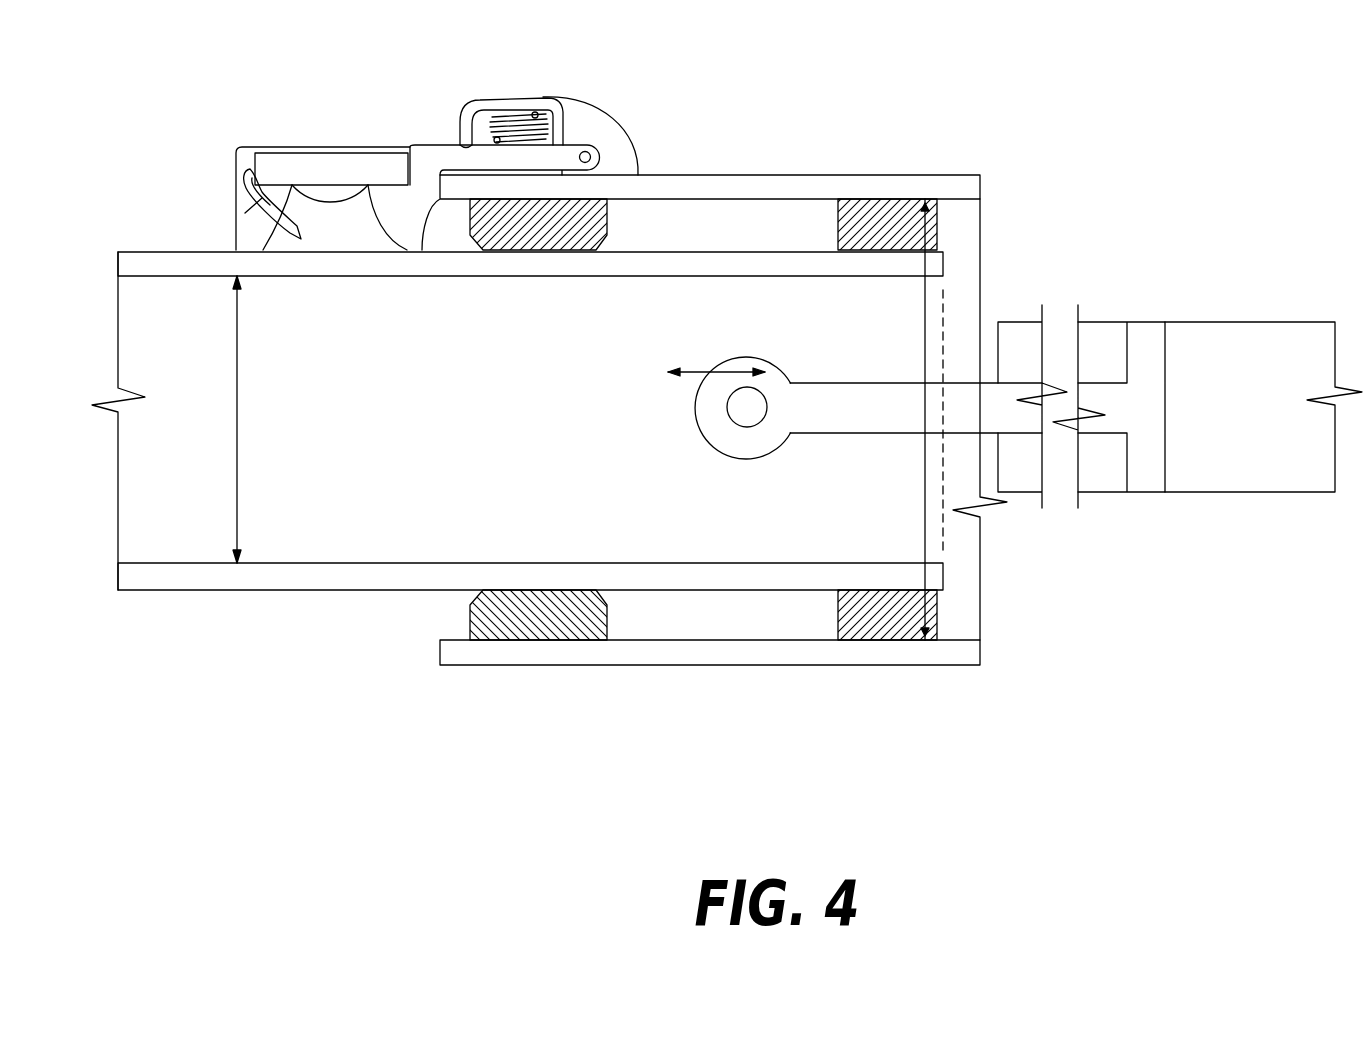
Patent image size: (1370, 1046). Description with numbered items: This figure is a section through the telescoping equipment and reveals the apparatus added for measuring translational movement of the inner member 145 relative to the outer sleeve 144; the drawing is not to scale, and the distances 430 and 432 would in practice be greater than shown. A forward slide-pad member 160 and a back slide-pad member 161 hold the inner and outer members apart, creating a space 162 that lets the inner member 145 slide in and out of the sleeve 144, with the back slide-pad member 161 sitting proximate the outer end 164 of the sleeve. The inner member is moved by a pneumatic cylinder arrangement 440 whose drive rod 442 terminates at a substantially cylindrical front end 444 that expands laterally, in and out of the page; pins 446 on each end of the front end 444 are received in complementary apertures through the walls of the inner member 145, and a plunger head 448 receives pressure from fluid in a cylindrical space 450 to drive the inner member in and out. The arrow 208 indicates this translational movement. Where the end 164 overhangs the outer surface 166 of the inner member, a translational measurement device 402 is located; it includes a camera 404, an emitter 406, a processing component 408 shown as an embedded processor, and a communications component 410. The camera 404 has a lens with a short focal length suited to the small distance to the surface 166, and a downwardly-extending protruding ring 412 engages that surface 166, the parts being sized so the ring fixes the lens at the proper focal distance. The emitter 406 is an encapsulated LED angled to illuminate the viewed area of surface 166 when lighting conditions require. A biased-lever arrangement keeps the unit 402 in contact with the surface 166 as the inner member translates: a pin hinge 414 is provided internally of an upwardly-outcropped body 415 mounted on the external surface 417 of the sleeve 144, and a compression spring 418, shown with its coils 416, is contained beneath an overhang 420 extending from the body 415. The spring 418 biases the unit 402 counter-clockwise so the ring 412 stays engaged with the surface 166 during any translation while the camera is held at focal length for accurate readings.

The translational measurement device 402 is at (326, 104).
The camera 404 is at (350, 170).
The emitter 406 is at (262, 222).
The processing component 408 is at (280, 168).
The communications component 410 is at (280, 168).
The downwardly-extending protruding ring 412 is at (268, 255).
The outer sleeve 144 is at (333, 198).
The inner member 145 is at (340, 280).
The outer end 164 is at (432, 232).
The outer surface 166 is at (133, 252).
The distance 430 is at (237, 433).
The pin hinge 414 is at (590, 151).
The upwardly-outcropped body 415 is at (597, 97).
The coil spring 416 is at (550, 122).
The external surface 417 is at (820, 175).
The compression spring 418 is at (517, 113).
The overhang 420 is at (479, 110).
The forward slide-pad member 160 is at (597, 223).
The space 162 is at (652, 227).
The back slide-pad member 161 is at (895, 205).
The direction of movement 208 is at (722, 358).
The drive rod 442 is at (855, 383).
The distance 432 is at (920, 435).
The front end 444 is at (758, 445).
The pins 446 is at (752, 418).
The pneumatic cylinder arrangement 440 is at (1104, 259).
The plunger head 448 is at (1145, 373).
The cylindrical space 450 is at (1258, 340).